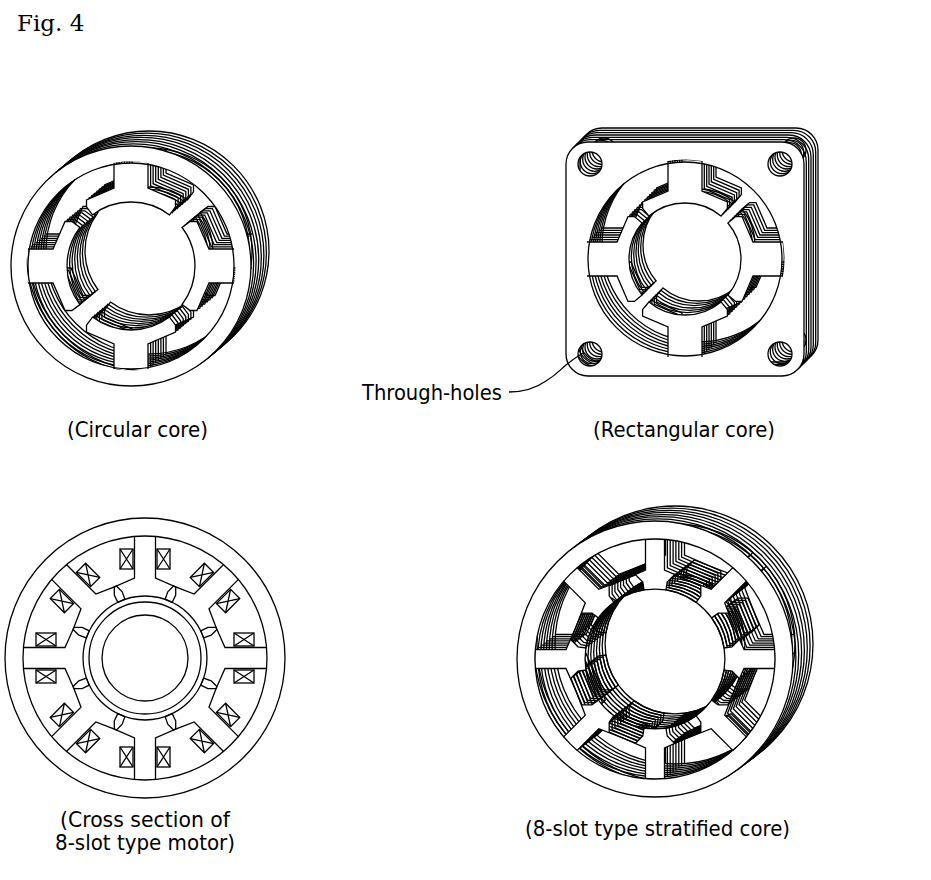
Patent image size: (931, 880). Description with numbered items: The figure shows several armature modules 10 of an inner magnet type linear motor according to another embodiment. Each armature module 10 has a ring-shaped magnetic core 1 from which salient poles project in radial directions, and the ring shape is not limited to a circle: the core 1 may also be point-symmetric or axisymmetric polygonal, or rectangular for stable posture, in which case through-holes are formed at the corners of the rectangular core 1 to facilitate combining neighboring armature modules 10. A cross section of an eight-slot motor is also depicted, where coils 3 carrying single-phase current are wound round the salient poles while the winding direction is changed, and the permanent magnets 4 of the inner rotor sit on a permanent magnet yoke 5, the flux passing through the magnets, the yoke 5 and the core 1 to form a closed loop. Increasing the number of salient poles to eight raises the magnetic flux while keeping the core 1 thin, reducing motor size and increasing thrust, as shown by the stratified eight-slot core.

The magnetic core 1 is at (230, 318).
The coils 3 is at (252, 638).
The permanent magnets 4 is at (198, 600).
The permanent magnet yoke 5 is at (192, 665).
The armature module 10 is at (171, 268).